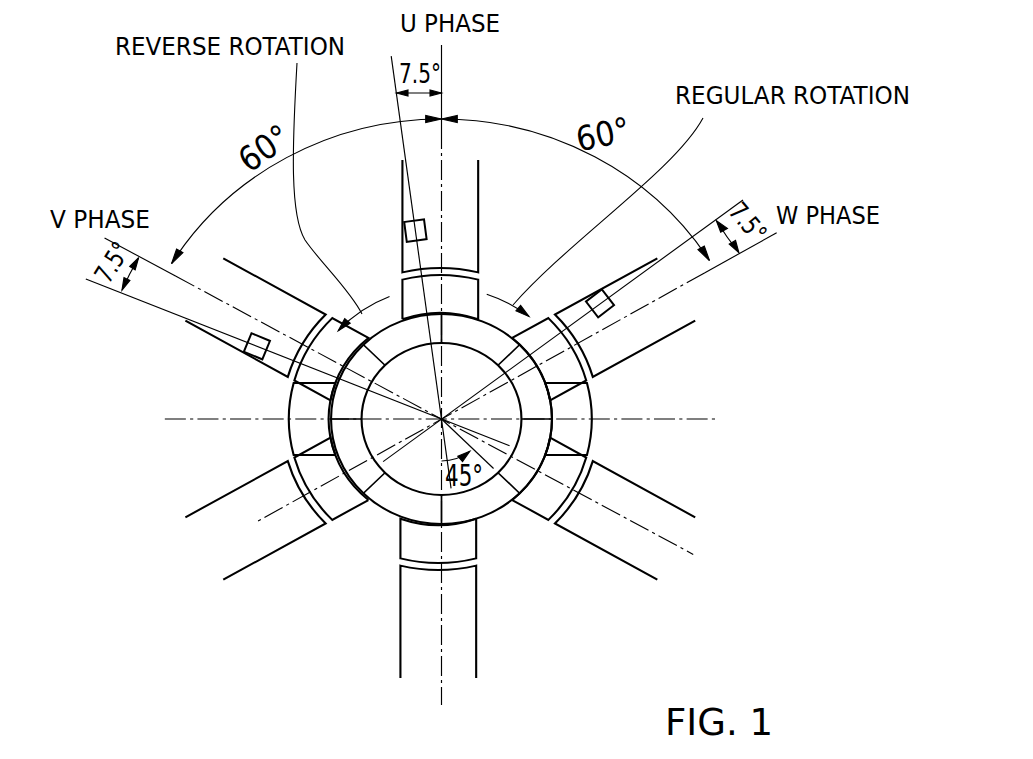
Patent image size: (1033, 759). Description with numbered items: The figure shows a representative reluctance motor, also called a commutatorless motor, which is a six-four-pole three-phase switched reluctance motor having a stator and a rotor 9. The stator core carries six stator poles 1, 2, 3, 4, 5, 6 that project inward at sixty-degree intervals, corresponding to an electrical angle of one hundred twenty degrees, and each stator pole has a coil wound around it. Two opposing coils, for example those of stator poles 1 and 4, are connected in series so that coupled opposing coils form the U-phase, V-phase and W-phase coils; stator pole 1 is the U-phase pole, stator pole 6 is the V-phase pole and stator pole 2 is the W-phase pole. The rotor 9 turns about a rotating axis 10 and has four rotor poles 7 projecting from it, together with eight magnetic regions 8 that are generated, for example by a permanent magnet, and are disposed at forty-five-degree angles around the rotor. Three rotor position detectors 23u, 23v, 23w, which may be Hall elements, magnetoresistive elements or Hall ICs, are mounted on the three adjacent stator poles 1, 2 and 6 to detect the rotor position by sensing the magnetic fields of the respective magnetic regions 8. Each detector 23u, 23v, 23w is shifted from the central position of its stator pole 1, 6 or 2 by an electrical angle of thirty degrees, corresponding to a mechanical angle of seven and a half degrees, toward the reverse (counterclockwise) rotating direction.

The stator pole 1 is at (482, 196).
The stator pole 2 is at (676, 332).
The stator pole 3 is at (673, 498).
The stator pole 4 is at (400, 640).
The stator pole 5 is at (221, 497).
The stator pole 6 is at (272, 282).
The rotor pole 7 is at (597, 430).
The magnetic region 8 is at (490, 522).
The rotor 9 is at (378, 507).
The rotating axis 10 is at (443, 418).
The rotor position detector 23u is at (404, 233).
The rotor position detector 23v is at (258, 360).
The rotor position detector 23w is at (633, 348).